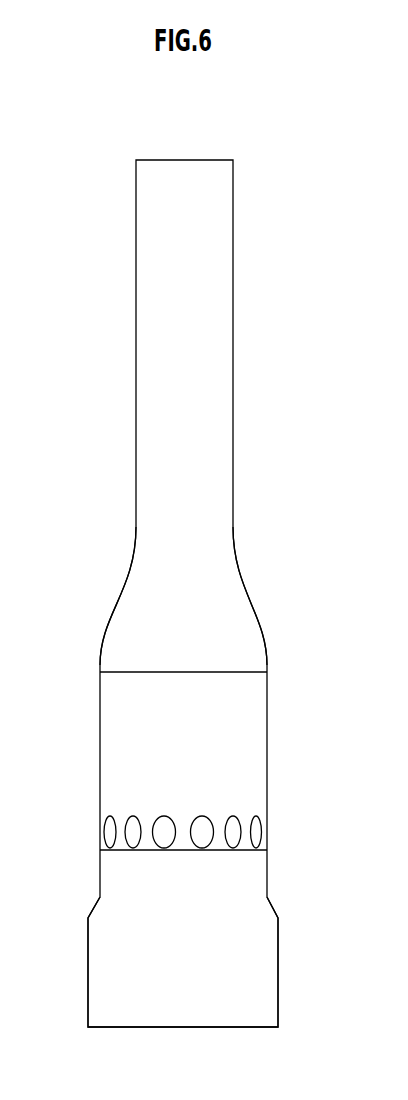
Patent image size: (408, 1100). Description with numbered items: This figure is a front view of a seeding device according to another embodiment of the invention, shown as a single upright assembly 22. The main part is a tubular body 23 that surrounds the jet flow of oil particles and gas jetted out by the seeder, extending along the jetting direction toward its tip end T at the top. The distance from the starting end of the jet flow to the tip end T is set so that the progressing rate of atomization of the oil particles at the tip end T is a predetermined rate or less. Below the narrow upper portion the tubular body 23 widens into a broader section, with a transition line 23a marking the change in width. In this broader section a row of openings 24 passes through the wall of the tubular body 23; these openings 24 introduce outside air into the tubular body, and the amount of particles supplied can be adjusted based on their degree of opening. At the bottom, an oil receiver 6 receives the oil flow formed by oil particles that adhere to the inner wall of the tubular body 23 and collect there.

The tube 22 is at (314, 308).
The tip end T is at (152, 158).
The tubular body 23 is at (254, 592).
The step portion 23a is at (268, 703).
The openings 24 is at (164, 816).
The oil receiver 6 is at (274, 900).